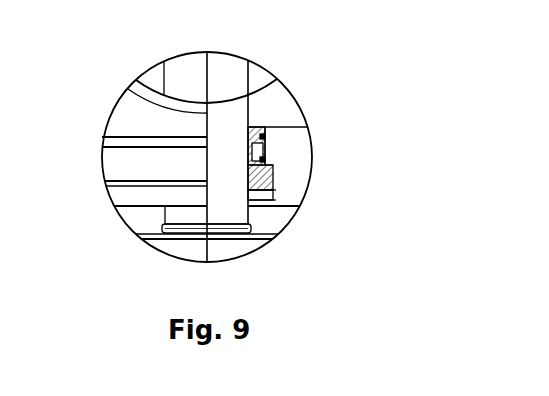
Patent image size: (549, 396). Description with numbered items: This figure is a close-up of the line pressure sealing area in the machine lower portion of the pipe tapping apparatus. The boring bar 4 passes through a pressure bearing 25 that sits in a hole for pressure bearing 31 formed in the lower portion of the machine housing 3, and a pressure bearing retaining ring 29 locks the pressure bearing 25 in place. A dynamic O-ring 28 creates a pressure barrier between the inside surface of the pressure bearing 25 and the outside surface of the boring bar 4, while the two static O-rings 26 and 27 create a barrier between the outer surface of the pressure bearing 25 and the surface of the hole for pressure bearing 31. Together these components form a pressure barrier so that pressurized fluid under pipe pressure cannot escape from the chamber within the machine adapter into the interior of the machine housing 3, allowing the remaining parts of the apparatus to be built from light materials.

The machine housing 3 is at (135, 122).
The boring bar 4 is at (185, 77).
The dynamic O-ring 28 is at (267, 127).
The static O-ring 26 is at (266, 140).
The hole for pressure bearing 31 is at (270, 147).
The static O-ring 27 is at (267, 155).
The pressure bearing 25 is at (267, 175).
The pressure bearing retaining ring 29 is at (286, 194).